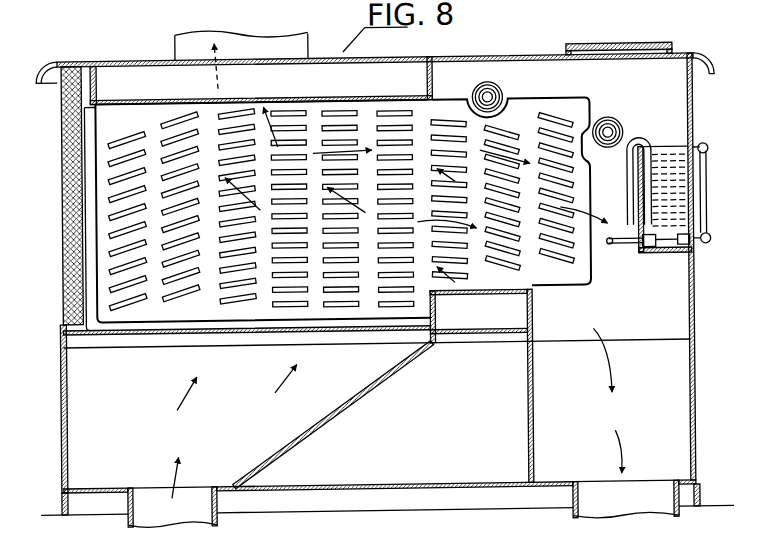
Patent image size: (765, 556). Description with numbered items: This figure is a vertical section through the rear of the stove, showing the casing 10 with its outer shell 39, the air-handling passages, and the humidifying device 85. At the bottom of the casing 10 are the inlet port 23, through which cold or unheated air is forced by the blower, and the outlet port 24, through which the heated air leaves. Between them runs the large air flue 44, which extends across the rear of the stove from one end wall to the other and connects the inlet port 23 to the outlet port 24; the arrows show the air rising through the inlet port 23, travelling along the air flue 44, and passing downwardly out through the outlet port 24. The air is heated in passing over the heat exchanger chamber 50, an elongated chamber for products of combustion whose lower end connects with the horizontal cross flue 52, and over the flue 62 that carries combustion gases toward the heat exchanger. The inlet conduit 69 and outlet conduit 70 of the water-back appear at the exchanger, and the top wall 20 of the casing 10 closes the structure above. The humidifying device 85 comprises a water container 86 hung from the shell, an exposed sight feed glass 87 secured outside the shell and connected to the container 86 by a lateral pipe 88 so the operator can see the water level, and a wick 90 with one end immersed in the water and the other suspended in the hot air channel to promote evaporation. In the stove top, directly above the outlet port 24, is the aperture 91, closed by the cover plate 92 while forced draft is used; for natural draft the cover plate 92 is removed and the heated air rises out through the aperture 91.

The casing 10 is at (61, 163).
The top wall 20 is at (118, 63).
The inlet port 23 is at (138, 491).
The outlet port 24 is at (646, 487).
The outer shell 39 is at (692, 122).
The air flue 44 is at (652, 190).
The heat exchanger chamber 50 is at (572, 124).
The cross flue 52 is at (498, 329).
The flue 62 is at (135, 103).
The inlet conduit 69 is at (622, 137).
The outlet conduit 70 is at (490, 97).
The humidifying device 85 is at (665, 263).
The water container 86 is at (636, 243).
The sight feed glass 87 is at (706, 226).
The lateral pipe 88 is at (696, 254).
The wick 90 is at (625, 173).
The aperture 91 is at (653, 62).
The cover plate 92 is at (602, 53).